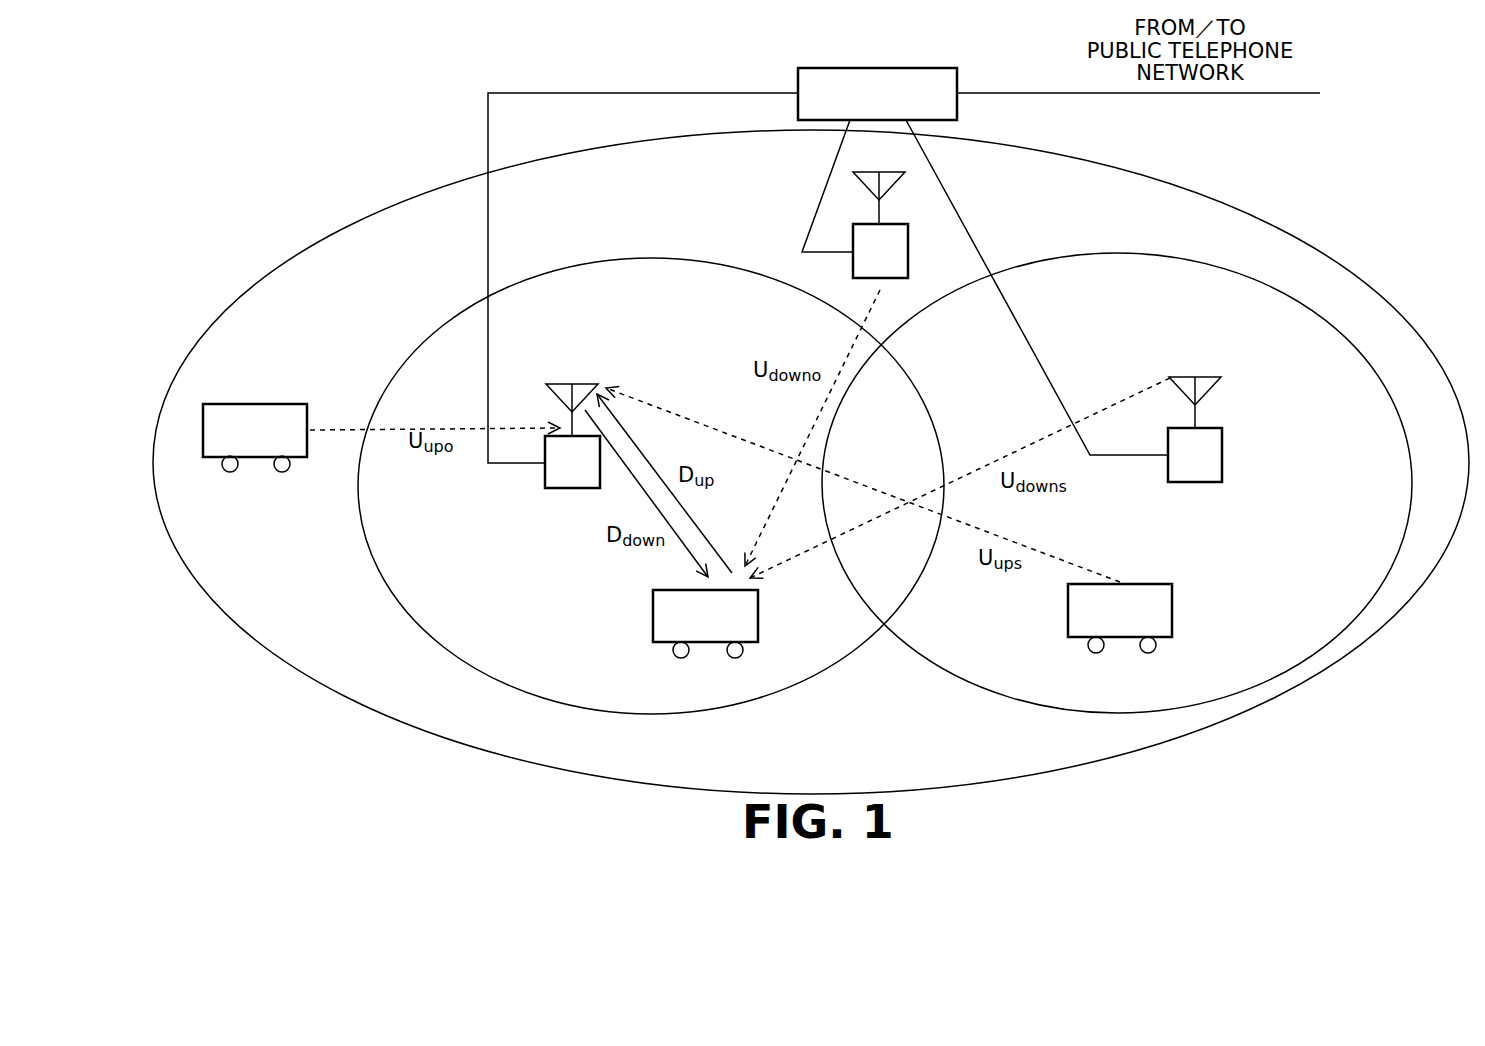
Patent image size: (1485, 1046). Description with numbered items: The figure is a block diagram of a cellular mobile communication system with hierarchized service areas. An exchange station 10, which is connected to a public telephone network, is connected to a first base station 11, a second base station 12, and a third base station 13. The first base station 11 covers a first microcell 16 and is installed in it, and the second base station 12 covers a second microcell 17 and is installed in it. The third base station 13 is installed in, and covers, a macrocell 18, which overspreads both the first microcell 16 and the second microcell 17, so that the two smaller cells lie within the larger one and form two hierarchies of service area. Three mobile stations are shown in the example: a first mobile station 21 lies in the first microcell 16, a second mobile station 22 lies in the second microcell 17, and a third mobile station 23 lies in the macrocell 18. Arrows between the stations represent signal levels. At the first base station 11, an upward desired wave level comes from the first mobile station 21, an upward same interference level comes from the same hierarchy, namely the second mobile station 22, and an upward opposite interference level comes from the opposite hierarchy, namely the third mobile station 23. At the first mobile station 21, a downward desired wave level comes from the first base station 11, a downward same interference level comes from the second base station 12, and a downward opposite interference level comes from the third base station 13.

The exchange station 10 is at (878, 68).
The first base station 11 is at (572, 384).
The second base station 12 is at (1195, 377).
The third base station 13 is at (908, 248).
The first microcell 16 is at (652, 714).
The second microcell 17 is at (1068, 708).
The macrocell 18 is at (1216, 206).
The first mobile station 21 is at (653, 617).
The second mobile station 22 is at (1172, 608).
The third mobile station 23 is at (288, 404).